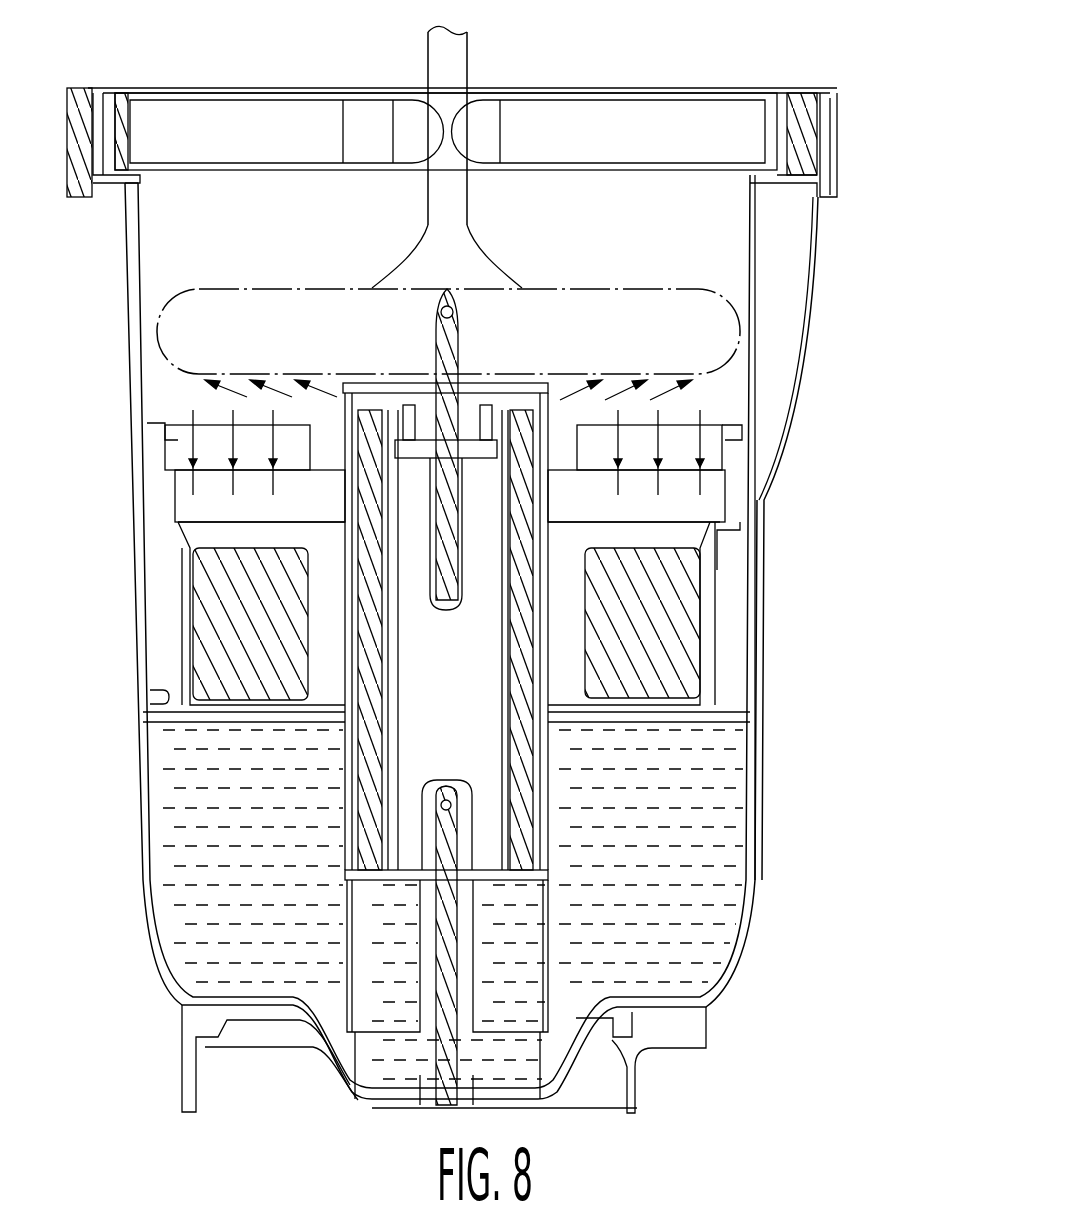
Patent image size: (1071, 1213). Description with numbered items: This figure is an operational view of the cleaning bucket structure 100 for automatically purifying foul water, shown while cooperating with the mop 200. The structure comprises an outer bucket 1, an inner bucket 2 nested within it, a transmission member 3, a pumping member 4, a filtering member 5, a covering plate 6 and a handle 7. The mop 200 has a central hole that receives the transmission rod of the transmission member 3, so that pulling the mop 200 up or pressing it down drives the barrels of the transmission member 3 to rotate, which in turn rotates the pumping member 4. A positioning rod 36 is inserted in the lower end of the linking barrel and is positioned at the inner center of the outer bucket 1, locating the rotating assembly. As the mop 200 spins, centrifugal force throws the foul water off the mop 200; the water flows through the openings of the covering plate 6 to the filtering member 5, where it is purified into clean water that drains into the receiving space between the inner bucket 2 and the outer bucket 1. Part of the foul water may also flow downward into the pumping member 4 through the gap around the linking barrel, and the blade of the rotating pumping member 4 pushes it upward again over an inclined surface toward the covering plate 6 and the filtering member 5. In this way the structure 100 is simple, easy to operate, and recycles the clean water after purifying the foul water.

The outer bucket 1 is at (120, 244).
The inner bucket 2 is at (135, 280).
The transmission member 3 is at (463, 333).
The pumping member 4 is at (523, 792).
The filtering member 5 is at (690, 649).
The covering plate 6 is at (730, 421).
The handle 7 is at (655, 133).
The positioning rod 36 is at (453, 927).
The cleaning bucket structure 100 is at (842, 114).
The mop 200 is at (497, 250).